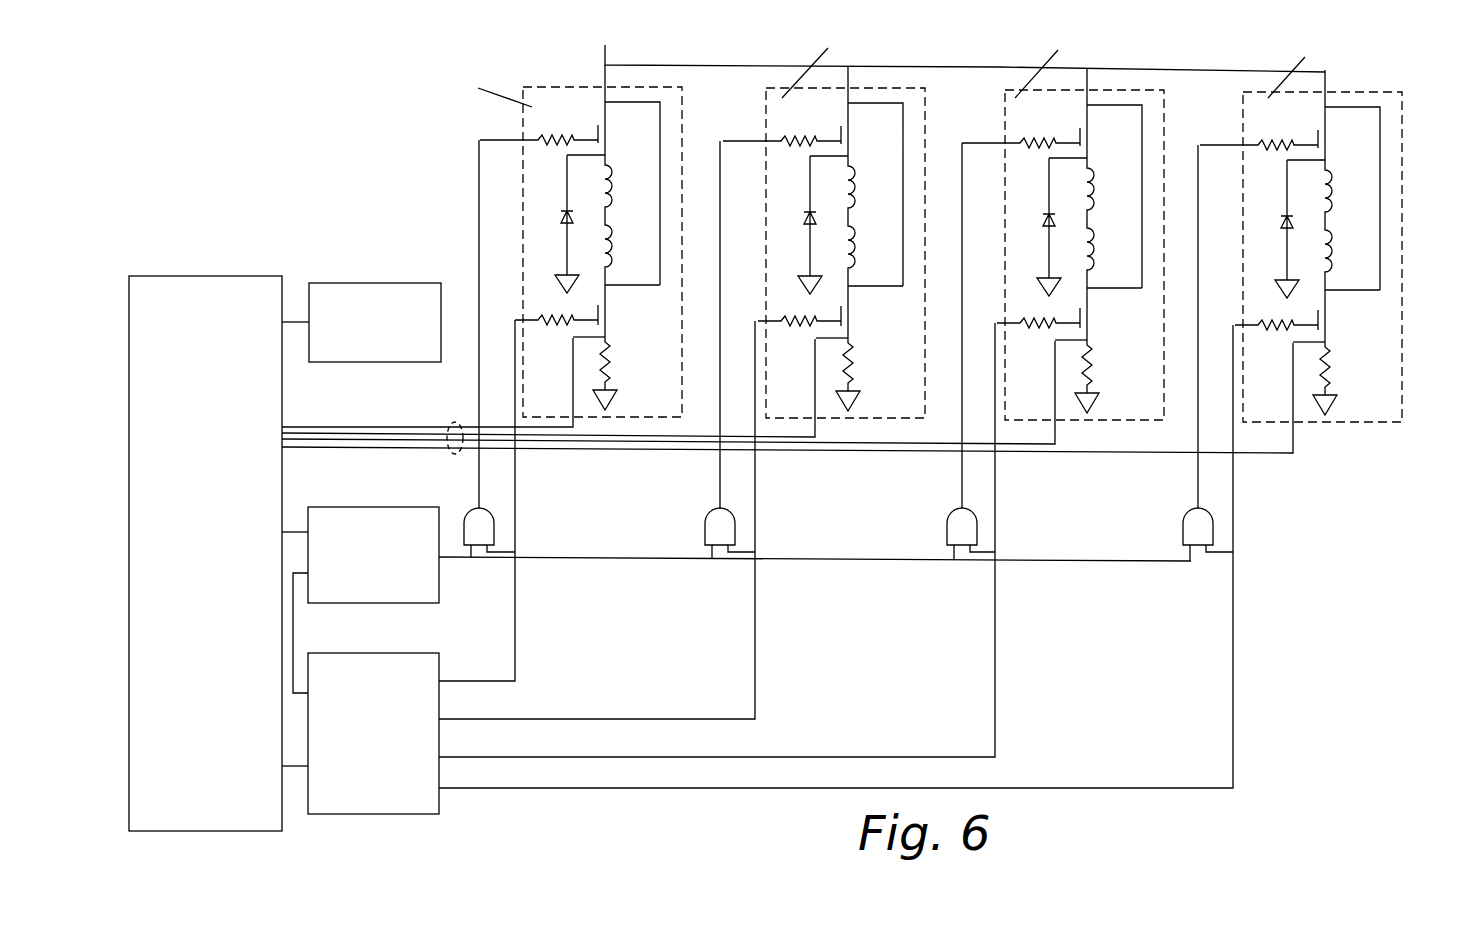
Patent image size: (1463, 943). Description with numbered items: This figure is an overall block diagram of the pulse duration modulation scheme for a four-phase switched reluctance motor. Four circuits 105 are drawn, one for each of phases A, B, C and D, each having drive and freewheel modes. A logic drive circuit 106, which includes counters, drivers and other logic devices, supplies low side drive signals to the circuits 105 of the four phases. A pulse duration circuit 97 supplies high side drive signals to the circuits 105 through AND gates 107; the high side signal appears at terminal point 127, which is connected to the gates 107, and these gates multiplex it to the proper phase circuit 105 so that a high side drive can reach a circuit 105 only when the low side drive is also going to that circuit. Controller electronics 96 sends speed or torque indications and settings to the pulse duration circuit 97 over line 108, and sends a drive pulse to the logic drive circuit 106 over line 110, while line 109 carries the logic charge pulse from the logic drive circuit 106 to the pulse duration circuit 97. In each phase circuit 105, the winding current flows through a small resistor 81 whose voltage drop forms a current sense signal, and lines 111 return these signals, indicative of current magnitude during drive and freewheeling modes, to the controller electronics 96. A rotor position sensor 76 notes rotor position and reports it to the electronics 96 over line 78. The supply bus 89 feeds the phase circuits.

The sensor 76 is at (381, 283).
The line 78 is at (299, 322).
The resistor 81 is at (606, 366).
The supply voltage bus 89 is at (708, 65).
The controller electronics 96 is at (211, 276).
The pulse duration circuit 97 is at (439, 578).
The circuits 105 is at (550, 87).
The logic drive circuit 106 is at (439, 800).
The AND gates 107 is at (494, 520).
The line 108 is at (300, 532).
The line 109 is at (294, 625).
The line 110 is at (297, 768).
The lines 111 is at (453, 422).
The terminal point 127 is at (453, 552).